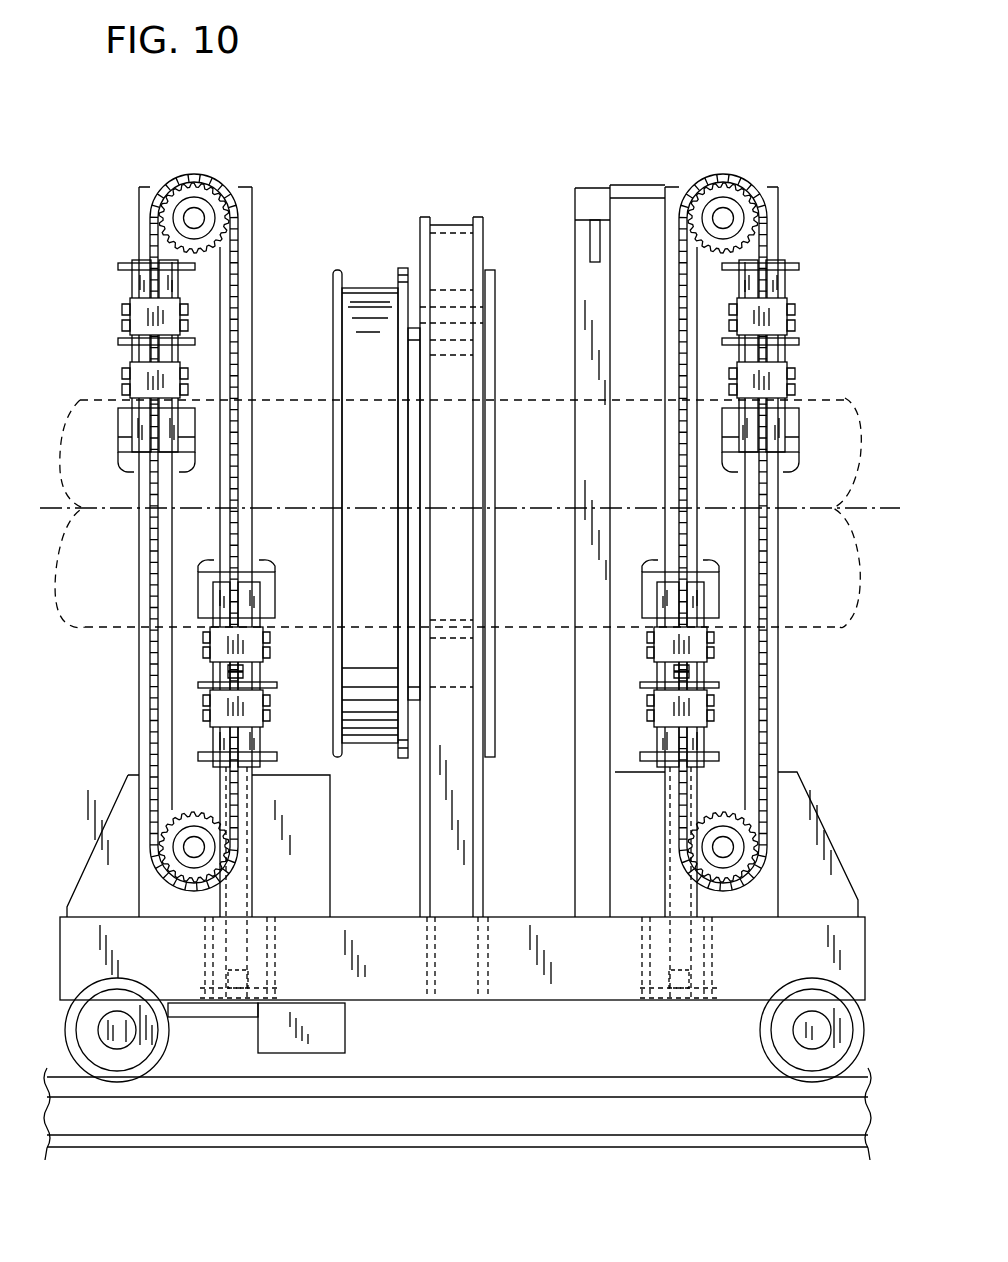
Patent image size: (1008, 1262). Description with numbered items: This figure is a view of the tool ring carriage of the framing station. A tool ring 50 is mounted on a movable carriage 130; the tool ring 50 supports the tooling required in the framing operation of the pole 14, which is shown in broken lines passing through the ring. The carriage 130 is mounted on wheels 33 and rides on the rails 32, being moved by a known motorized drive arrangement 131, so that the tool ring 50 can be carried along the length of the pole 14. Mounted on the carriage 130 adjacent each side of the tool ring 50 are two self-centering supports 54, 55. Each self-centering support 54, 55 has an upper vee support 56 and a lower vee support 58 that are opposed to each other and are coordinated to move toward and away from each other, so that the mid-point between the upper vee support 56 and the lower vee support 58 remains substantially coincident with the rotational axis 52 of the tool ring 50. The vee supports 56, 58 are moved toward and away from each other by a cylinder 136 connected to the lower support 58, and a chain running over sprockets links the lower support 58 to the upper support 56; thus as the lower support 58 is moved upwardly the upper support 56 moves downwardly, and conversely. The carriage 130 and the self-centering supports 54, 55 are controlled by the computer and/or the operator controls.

The pole 14 is at (303, 393).
The rails 32 is at (670, 1077).
The wheels 33 is at (157, 1053).
The tool ring 50 is at (358, 290).
The rotational axis 52 is at (868, 506).
The self-centering support 54 is at (227, 158).
The self-centering support 55 is at (757, 158).
The upper vee support 56 is at (122, 377).
The lower vee support 58 is at (267, 692).
The carriage 130 is at (115, 766).
The motorized drive arrangement 131 is at (345, 1040).
The cylinder 136 is at (258, 892).